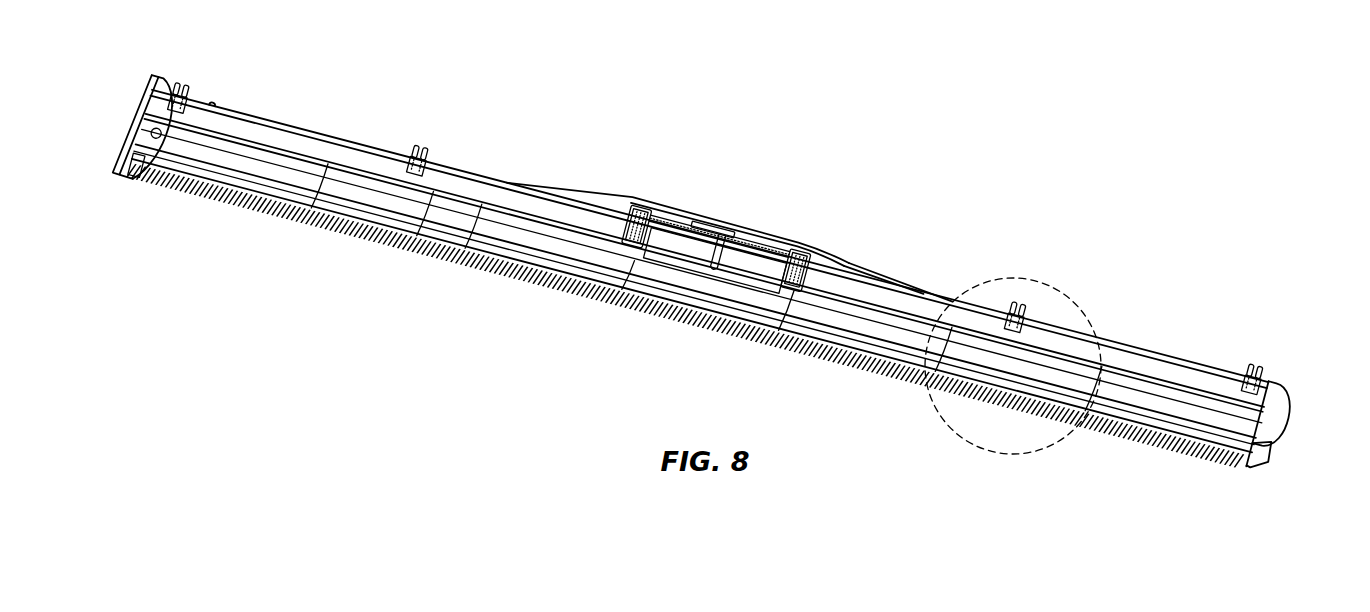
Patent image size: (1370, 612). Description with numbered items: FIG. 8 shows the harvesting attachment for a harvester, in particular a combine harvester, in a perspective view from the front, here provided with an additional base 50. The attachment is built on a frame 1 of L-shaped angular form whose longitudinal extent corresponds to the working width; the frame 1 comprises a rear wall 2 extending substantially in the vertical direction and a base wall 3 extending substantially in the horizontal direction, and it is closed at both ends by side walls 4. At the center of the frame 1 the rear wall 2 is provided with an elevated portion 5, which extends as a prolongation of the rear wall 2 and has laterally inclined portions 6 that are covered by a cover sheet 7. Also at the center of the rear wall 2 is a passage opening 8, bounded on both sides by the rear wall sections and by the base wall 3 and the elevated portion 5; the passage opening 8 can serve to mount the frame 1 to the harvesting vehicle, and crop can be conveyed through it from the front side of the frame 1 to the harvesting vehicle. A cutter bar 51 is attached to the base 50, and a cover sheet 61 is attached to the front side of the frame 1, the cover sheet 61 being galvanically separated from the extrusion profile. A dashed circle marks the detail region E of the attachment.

The frame 1 is at (997, 212).
The rear wall 2 is at (294, 140).
The base wall 3 is at (337, 187).
The side wall 4 is at (133, 122).
The elevated portion 5 is at (735, 242).
The inclined portion 6 is at (837, 270).
The cover sheet 7 is at (882, 278).
The passage opening 8 is at (688, 253).
The base 50 is at (565, 329).
The cutter bar 51 is at (722, 333).
The cover sheet 61 is at (411, 246).
The detail region E is at (1044, 285).